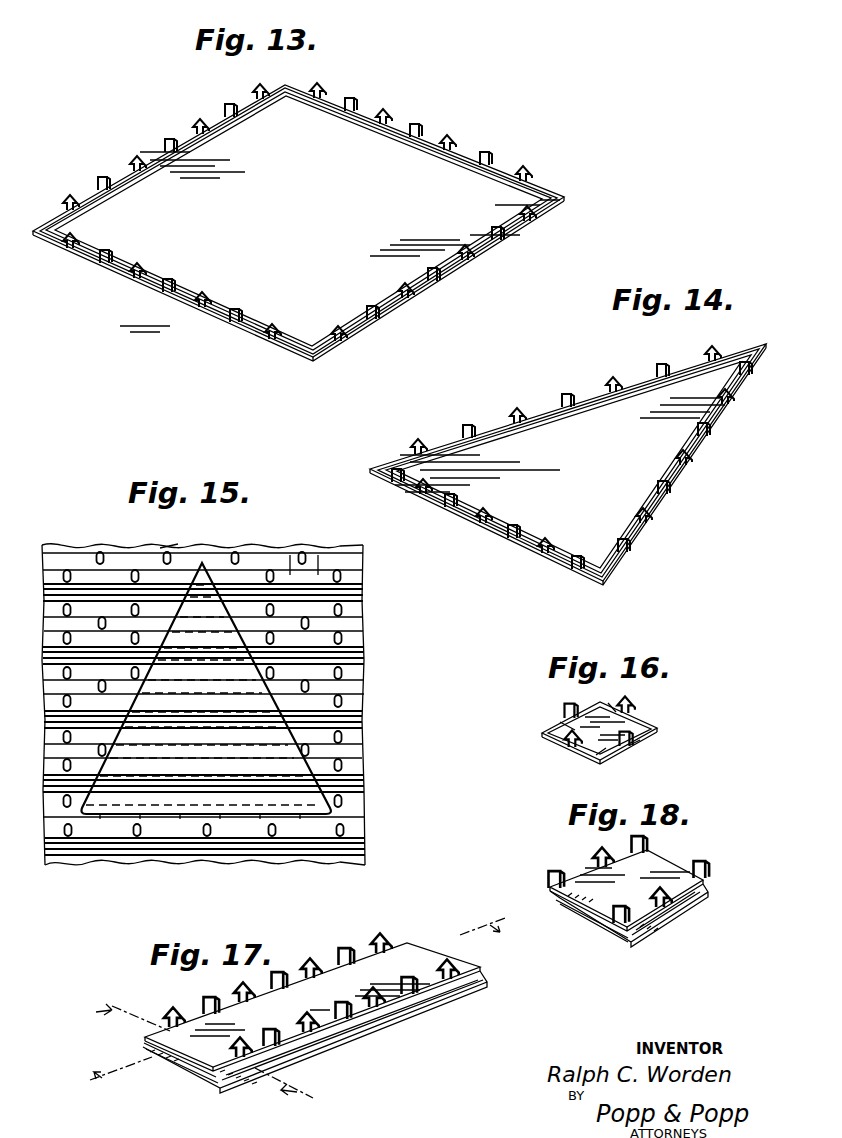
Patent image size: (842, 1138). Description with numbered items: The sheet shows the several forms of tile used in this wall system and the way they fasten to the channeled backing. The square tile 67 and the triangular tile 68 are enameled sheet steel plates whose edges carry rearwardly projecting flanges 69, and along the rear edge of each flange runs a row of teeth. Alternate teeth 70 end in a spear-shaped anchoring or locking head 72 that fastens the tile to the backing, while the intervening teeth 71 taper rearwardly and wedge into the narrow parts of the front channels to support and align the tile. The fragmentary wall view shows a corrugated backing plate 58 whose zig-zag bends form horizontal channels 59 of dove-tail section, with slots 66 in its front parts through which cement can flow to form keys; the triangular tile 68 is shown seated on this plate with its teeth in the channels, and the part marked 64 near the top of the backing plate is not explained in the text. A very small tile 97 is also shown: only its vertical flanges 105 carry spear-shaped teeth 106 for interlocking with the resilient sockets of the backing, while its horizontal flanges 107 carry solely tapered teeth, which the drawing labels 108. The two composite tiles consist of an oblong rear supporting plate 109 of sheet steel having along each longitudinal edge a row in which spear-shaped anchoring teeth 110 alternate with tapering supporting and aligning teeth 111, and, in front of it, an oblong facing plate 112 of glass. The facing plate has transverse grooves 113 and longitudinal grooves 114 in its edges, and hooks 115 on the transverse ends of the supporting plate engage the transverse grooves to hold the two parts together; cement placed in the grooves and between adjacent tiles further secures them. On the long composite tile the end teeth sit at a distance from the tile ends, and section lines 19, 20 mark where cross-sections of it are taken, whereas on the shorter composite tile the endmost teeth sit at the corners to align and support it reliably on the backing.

In FIG. 17, the section line 19- 19 is at (202, 1050).
In FIG. 17, the section line 20- 20 is at (286, 997).
In FIG. 15, the backing plate 58 is at (364, 605).
In FIG. 15, the horizontal channels 59 is at (290, 655).
In FIG. 15, the panel edge flange 64 is at (172, 556).
In FIG. 15, the slots 66 is at (272, 574).
In FIG. 13, the square tile 67 is at (298, 223).
In FIG. 14, the triangular tile 68 is at (568, 464).
In FIG. 15, the triangular tile 68 is at (206, 691).
In FIG. 13, the flanges 69 is at (124, 272).
In FIG. 14, the flanges 69 is at (538, 414).
In FIG. 13, the anchoring teeth 70 is at (446, 148).
In FIG. 14, the anchoring teeth 70 is at (670, 478).
In FIG. 13, the supporting and aligning teeth 71 is at (353, 102).
In FIG. 14, the supporting and aligning teeth 71 is at (722, 395).
In FIG. 13, the spear-shaped anchoring head 72 is at (137, 162).
In FIG. 14, the spear-shaped anchoring head 72 is at (613, 378).
In FIG. 16, the small tile 97 is at (603, 758).
In FIG. 16, the vertical flanges 105 is at (628, 722).
In FIG. 16, the spear-shaped teeth 106 is at (628, 710).
In FIG. 16, the horizontal flanges 107 is at (552, 723).
In FIG. 16, the plain tab of connector 108 is at (568, 708).
In FIG. 18, the rear supporting plate 109 is at (655, 878).
In FIG. 17, the rear supporting plate 109 is at (312, 1007).
In FIG. 18, the spear-shaped anchoring teeth 110 is at (600, 866).
In FIG. 17, the spear-shaped anchoring teeth 110 is at (170, 1020).
In FIG. 18, the tapering supporting and aligning teeth 111 is at (639, 846).
In FIG. 17, the tapering supporting and aligning teeth 111 is at (208, 1000).
In FIG. 18, the facing plate 112 is at (636, 945).
In FIG. 17, the facing plate 112 is at (360, 1042).
In FIG. 18, the transverse grooves 113 is at (590, 920).
In FIG. 17, the transverse grooves 113 is at (165, 1067).
In FIG. 18, the longitudinal grooves 114 is at (690, 910).
In FIG. 17, the longitudinal grooves 114 is at (402, 1022).
In FIG. 18, the hooks 115 is at (570, 915).
In FIG. 17, the hooks 115 is at (210, 1082).